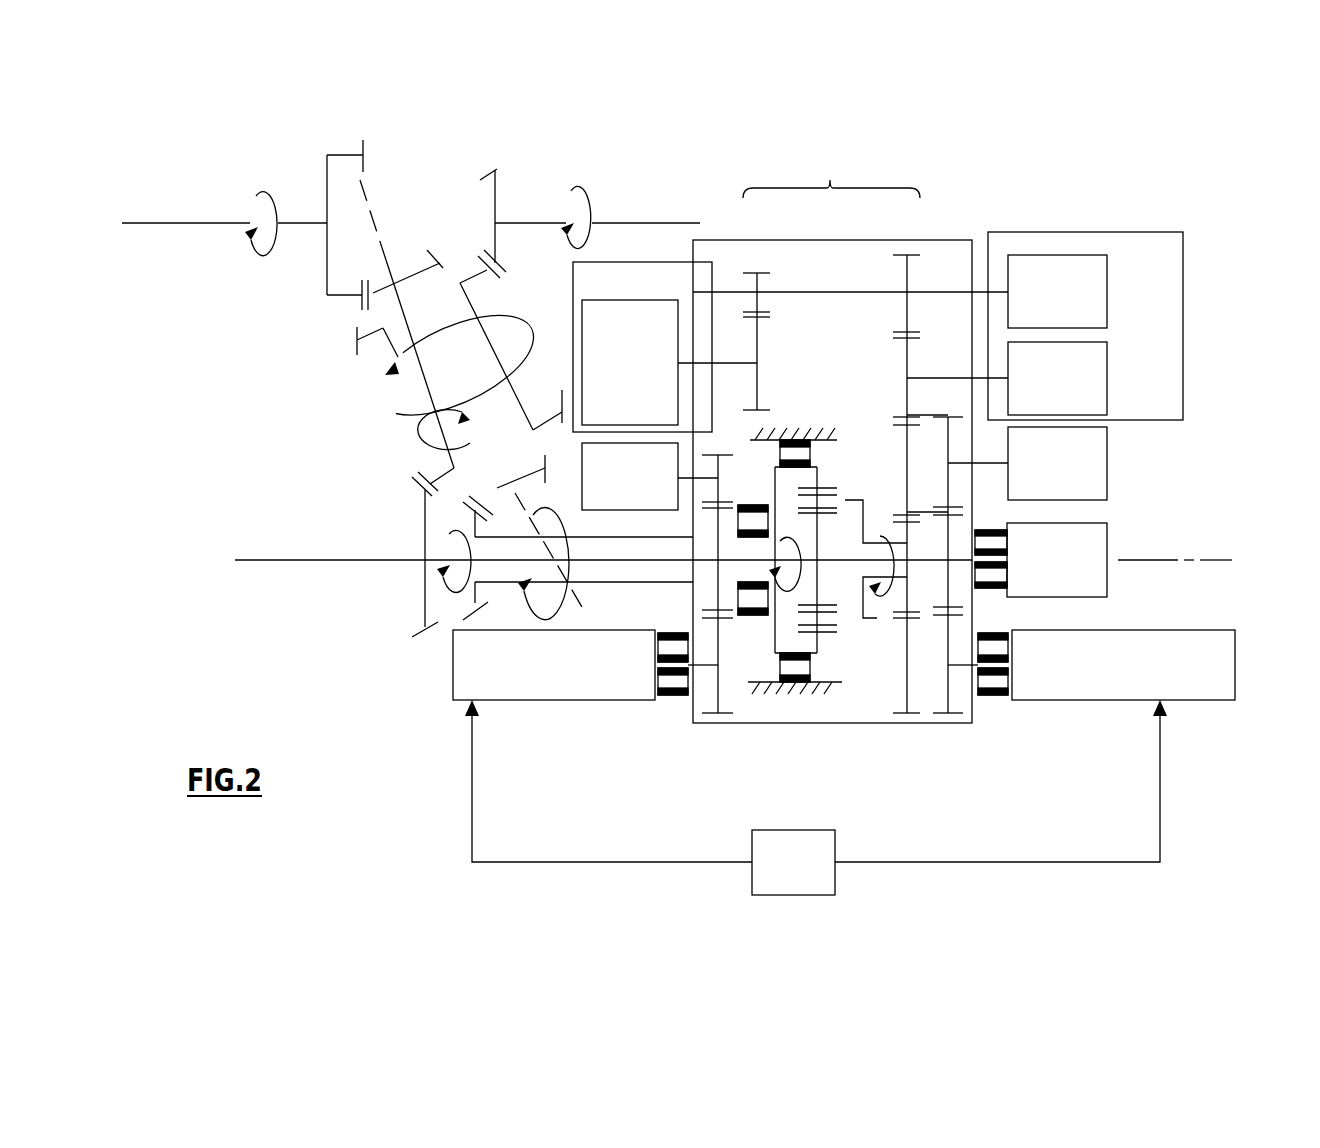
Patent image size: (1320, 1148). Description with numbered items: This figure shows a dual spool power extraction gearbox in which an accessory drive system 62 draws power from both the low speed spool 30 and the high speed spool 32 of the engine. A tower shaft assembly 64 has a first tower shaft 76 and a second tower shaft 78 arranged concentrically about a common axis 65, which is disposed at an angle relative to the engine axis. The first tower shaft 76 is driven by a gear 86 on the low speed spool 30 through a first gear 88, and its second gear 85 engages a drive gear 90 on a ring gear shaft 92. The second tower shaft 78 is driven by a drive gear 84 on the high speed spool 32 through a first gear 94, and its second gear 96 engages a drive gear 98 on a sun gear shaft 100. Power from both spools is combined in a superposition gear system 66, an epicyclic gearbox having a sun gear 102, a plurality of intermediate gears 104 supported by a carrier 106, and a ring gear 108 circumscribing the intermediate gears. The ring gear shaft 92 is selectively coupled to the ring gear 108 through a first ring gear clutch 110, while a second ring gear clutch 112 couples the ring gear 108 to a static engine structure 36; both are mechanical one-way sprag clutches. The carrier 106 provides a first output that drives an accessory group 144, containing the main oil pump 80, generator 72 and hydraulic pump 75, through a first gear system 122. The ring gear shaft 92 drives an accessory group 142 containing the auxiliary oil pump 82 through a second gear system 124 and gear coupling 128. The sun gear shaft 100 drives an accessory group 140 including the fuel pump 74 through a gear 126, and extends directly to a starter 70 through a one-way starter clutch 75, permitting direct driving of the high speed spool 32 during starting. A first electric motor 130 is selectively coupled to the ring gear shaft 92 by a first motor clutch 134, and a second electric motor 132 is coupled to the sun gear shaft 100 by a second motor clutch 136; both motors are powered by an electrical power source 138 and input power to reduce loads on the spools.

The low speed spool 30 is at (157, 226).
The high speed spool 32 is at (642, 215).
The static engine structure 36 is at (802, 430).
The accessory drive system 62 is at (881, 149).
The tower shaft assembly 64 is at (318, 371).
The common axis 65 is at (398, 257).
The superposition gear system 66 is at (860, 673).
The starter 70 is at (1110, 578).
The generator 72 is at (1107, 292).
The fuel pump 74 is at (1107, 463).
The hydraulic pump 75 is at (1107, 378).
The first tower shaft 76 is at (399, 358).
The second tower shaft 78 is at (418, 428).
The main oil pump 80 is at (597, 305).
The auxiliary oil pump 82 is at (582, 478).
The drive gear 84 is at (498, 168).
The second gear 85 is at (500, 496).
The gear 86 is at (368, 150).
The first gear 88 is at (388, 283).
The drive gear 90 is at (475, 600).
The ring gear shaft 92 is at (690, 578).
The first gear 94 is at (482, 282).
The second gear 96 is at (440, 480).
The drive gear 98 is at (425, 535).
The sun gear shaft 100 is at (640, 575).
The sun gear 102 is at (823, 585).
The intermediate gears 104 is at (822, 490).
The carrier 106 is at (848, 508).
The ring gear 108 is at (768, 503).
The first ring gear clutch 110 is at (755, 540).
The second ring gear clutch 112 is at (803, 452).
The first gear system 122 is at (830, 180).
The second gear system 124 is at (762, 440).
The gear 126 is at (934, 640).
The gear coupling 128 is at (726, 645).
The first electric motor 130 is at (575, 690).
The second electric motor 132 is at (1076, 690).
The first motor clutch 134 is at (678, 692).
The second motor clutch 136 is at (990, 692).
The electrical power source 138 is at (814, 880).
The accessory group 140 is at (1114, 433).
The accessory group 142 is at (658, 517).
The accessory group 144 is at (665, 265).